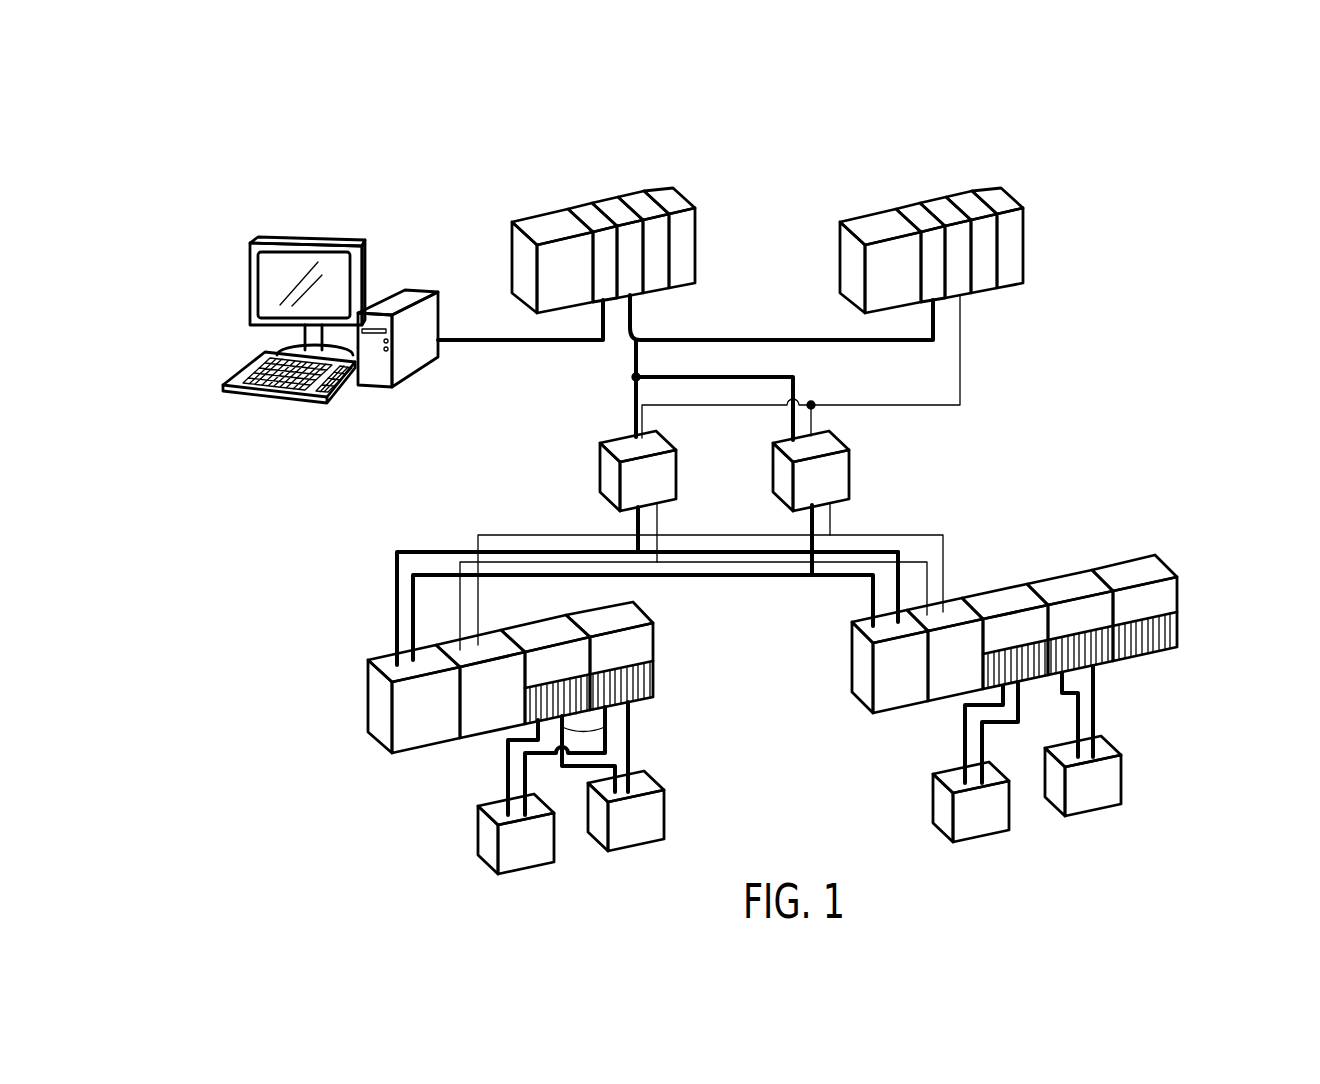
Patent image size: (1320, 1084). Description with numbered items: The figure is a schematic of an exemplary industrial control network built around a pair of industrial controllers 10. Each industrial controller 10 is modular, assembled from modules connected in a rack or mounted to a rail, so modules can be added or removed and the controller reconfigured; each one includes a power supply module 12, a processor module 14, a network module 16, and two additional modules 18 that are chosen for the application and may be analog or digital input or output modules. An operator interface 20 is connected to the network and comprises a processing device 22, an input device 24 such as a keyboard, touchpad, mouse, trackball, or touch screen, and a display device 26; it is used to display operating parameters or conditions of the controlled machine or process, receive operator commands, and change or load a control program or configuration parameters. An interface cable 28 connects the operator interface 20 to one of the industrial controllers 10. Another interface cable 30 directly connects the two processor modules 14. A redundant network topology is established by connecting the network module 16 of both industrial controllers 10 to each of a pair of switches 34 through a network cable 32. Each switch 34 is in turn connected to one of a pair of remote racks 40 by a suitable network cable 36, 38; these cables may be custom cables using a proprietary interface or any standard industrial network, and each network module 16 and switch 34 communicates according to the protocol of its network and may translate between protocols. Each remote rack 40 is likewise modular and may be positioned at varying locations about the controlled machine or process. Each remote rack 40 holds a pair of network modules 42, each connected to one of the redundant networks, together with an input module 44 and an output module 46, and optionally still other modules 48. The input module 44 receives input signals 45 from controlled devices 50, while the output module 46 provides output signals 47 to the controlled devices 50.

The industrial controller 10 is at (504, 178).
The power supply module 12 is at (555, 222).
The processor module 14 is at (590, 215).
The network module 16 is at (620, 210).
The additional modules 18 is at (668, 197).
The operator interface 20 is at (220, 207).
The processing device 22 is at (415, 295).
The input device 24 is at (238, 368).
The display device 26 is at (250, 280).
The interface cable 28 is at (521, 342).
The interface cable 30 is at (775, 338).
The network cable 32 is at (636, 352).
The switch 34 is at (605, 470).
The network cable 36 is at (413, 600).
The network cable 38 is at (461, 605).
The remote rack 40 is at (340, 691).
The network module 42 is at (409, 722).
The input module 44 is at (548, 674).
The input signals 45 is at (508, 765).
The output module 46 is at (606, 661).
The output signals 47 is at (524, 788).
The other modules 48 is at (1133, 614).
The controlled devices 50 is at (511, 857).